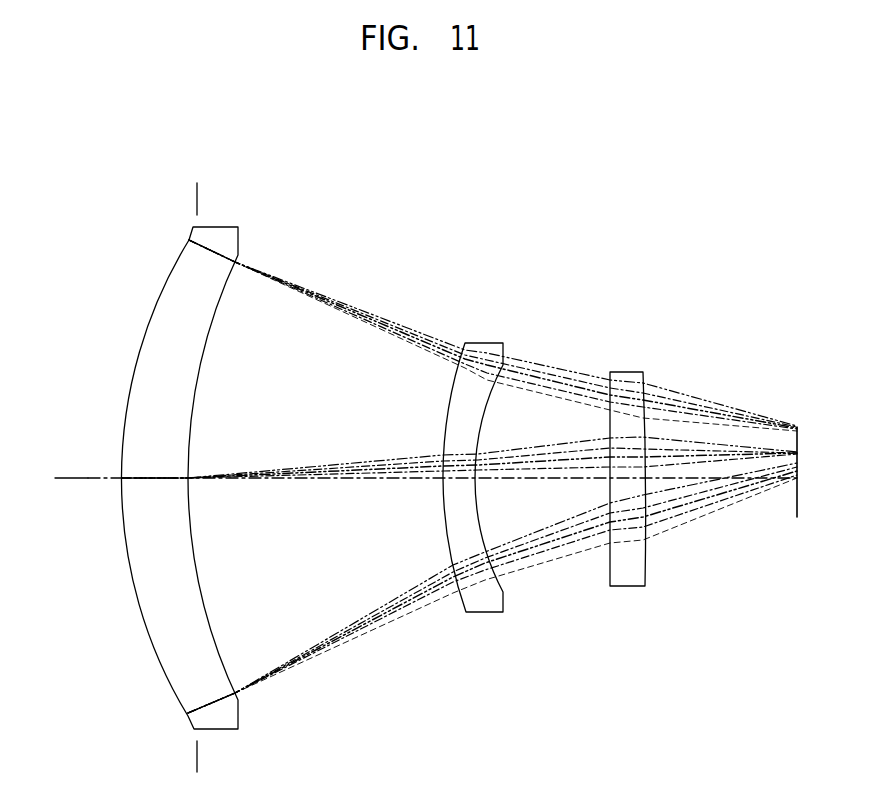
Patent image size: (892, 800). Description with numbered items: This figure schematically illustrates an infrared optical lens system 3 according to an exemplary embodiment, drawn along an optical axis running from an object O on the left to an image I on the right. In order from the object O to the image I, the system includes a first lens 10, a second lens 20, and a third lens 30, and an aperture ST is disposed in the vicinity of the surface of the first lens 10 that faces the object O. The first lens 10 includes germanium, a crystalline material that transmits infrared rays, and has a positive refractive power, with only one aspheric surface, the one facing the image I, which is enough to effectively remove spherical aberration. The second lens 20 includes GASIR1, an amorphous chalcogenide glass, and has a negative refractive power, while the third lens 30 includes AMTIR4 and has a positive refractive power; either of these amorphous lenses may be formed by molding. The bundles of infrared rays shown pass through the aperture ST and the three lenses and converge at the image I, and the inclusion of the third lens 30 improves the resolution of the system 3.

The infrared optical lens system 3 is at (600, 224).
The first lens 10 is at (217, 227).
The second lens 20 is at (485, 343).
The third lens 30 is at (630, 372).
The aperture ST is at (192, 198).
The object O is at (417, 481).
The image I is at (805, 472).